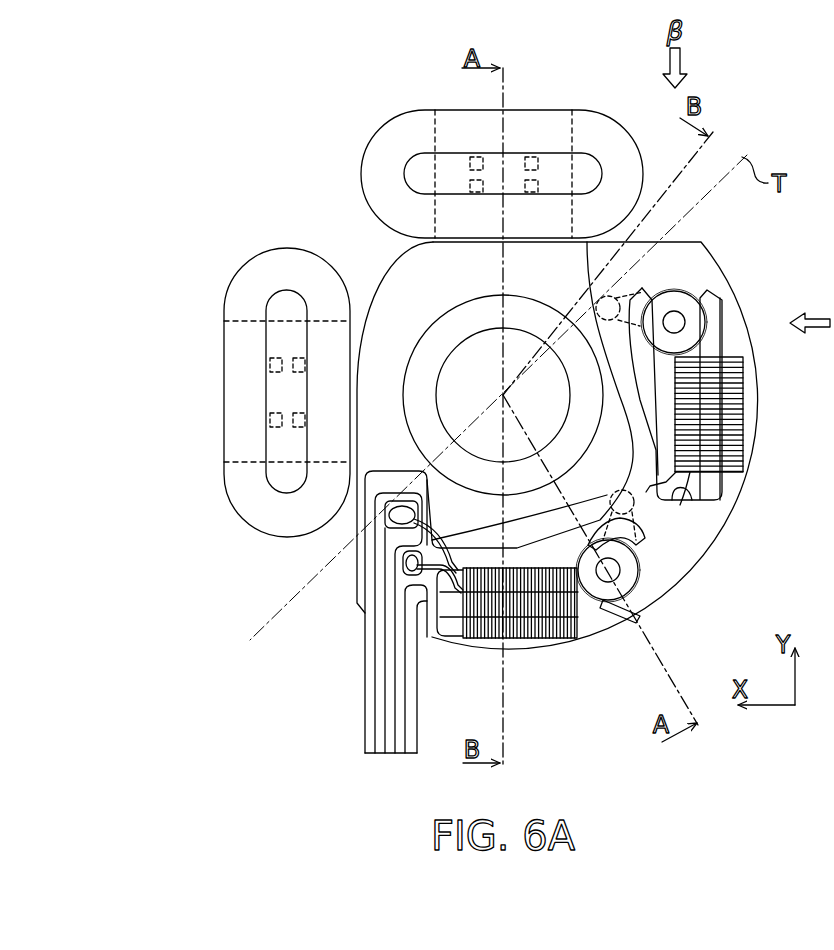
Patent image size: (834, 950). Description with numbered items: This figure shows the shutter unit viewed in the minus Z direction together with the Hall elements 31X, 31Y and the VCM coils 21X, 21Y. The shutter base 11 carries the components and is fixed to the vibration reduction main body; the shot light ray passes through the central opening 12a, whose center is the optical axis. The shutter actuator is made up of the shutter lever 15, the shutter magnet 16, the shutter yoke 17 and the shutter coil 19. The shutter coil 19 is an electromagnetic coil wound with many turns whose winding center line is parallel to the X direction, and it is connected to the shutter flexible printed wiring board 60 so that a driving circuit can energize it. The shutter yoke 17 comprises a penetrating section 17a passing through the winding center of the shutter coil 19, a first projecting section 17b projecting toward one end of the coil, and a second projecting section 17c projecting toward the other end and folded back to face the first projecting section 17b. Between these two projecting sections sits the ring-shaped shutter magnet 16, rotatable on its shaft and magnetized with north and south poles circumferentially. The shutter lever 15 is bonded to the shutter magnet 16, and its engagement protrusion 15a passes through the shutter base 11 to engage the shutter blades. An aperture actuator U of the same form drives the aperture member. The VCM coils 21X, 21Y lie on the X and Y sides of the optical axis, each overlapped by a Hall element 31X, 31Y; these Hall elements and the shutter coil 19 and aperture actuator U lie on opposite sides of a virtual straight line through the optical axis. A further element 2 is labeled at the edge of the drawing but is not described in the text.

The shutter base 11 is at (412, 300).
The opening 12a is at (462, 412).
The shutter lever 15 is at (643, 533).
The engagement protrusion 15a is at (632, 505).
The shutter magnet 16 is at (630, 578).
The shutter yoke 17 is at (447, 605).
The penetrating section 17a is at (577, 620).
The first projecting section 17b is at (605, 612).
The second projecting section 17c is at (636, 560).
The shutter coil 19 is at (540, 640).
The VCM coil 21X is at (283, 262).
The VCM coil 21Y is at (588, 125).
The Hall element 31X is at (278, 393).
The Hall element 31Y is at (510, 173).
The shutter flexible printed wiring board 60 is at (366, 695).
The aperture actuator U is at (715, 320).
The unit 2 is at (829, 445).